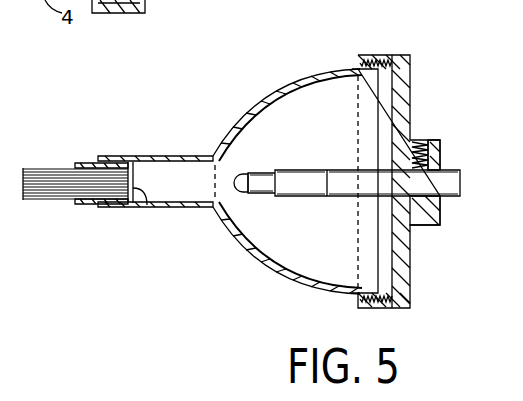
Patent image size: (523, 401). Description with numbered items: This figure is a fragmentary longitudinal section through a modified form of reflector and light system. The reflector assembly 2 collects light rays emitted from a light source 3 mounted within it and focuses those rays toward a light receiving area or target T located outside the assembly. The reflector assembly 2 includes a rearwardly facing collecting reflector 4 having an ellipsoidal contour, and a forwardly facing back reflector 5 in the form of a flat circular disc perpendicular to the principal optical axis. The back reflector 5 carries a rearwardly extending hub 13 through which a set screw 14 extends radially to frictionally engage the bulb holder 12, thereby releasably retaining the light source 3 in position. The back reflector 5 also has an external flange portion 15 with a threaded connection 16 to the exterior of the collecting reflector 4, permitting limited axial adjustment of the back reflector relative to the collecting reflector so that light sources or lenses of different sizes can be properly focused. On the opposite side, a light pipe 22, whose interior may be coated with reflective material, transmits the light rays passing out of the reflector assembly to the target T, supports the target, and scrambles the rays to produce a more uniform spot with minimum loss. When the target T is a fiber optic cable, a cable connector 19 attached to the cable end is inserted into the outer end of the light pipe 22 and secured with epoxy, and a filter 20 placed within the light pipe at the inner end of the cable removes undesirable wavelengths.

The reflector assembly 2 is at (280, 92).
The light source 3 is at (270, 203).
The collecting reflector 4 is at (307, 286).
The back reflector 5 is at (412, 90).
The bulb holder 12 is at (450, 197).
The hub 13 is at (440, 150).
The set screw 14 is at (418, 140).
The external flange portion 15 is at (382, 54).
The threaded connection 16 is at (352, 68).
The cable connector 19 is at (88, 162).
The filter 20 is at (135, 177).
The light pipe 22 is at (165, 207).
The target T is at (147, 205).